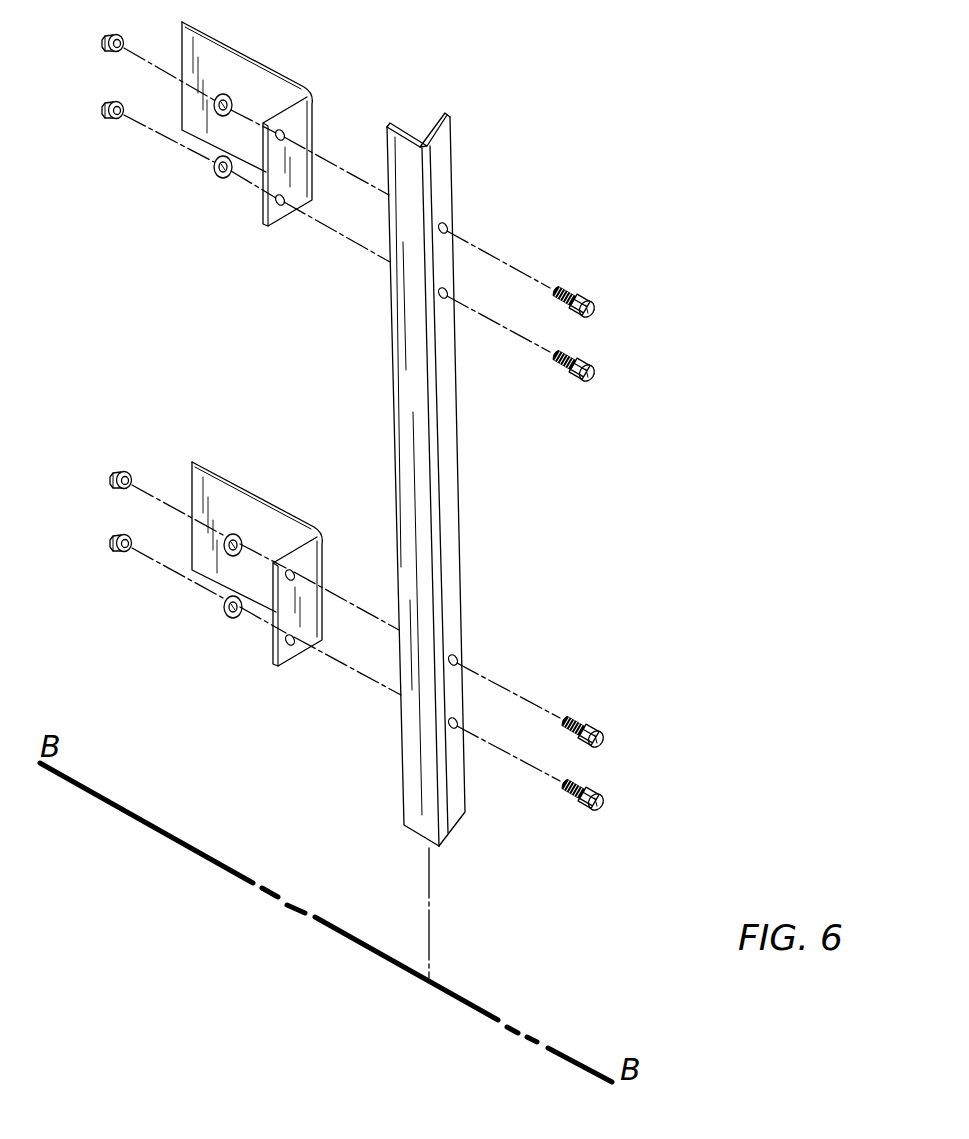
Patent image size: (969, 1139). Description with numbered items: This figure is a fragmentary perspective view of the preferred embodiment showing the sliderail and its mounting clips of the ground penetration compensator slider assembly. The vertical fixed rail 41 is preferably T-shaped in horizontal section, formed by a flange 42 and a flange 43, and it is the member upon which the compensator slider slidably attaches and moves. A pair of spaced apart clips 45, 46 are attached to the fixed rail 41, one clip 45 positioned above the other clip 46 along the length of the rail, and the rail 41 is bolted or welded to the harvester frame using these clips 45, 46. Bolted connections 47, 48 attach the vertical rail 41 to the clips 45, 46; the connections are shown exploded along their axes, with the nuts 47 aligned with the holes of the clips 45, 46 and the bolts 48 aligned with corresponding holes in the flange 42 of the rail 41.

The vertical fixed rail 41 is at (393, 403).
The flange 42 is at (413, 200).
The flange 43 is at (438, 140).
The clip 45 is at (263, 225).
The clip 46 is at (223, 405).
The bolted connection 47 is at (107, 106).
The bolted connection 48 is at (598, 375).